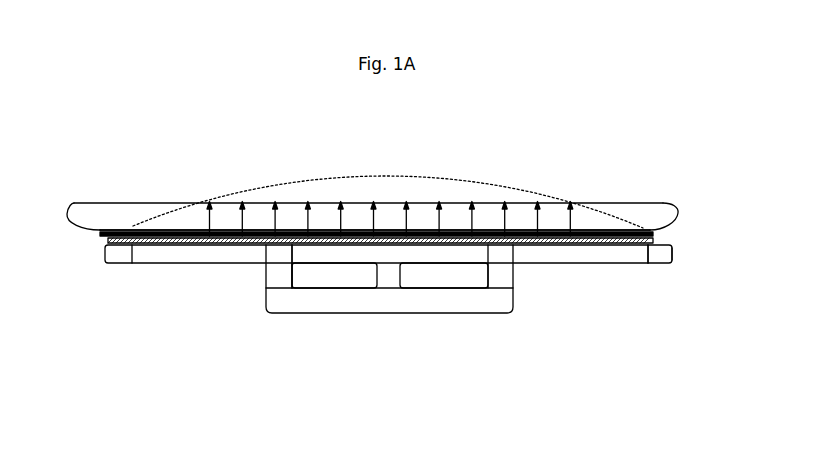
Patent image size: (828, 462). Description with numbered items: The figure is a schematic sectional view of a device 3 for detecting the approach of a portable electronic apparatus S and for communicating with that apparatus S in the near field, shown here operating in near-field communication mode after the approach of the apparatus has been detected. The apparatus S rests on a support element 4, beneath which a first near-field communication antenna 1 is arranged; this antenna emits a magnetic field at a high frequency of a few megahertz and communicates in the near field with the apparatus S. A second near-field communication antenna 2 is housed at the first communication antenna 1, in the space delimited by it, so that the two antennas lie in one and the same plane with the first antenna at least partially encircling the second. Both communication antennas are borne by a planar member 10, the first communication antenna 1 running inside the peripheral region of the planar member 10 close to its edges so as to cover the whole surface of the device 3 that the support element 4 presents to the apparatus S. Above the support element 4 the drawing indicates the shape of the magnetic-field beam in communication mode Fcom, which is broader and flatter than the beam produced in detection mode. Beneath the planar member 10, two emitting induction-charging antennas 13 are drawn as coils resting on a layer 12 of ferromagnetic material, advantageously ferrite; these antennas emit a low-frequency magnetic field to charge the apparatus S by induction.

The portable electronic apparatus S is at (93, 210).
The first near-field communication antenna 1 is at (663, 253).
The second near-field communication antenna 2 is at (286, 250).
The device 3 is at (145, 229).
The support element 4 is at (193, 230).
The planar member 10 is at (557, 253).
The layer made of ferromagnetic material 12 is at (308, 302).
The emitting induction-charging antenna 13 is at (442, 275).
The magnetic-field beam in communication mode Fcom is at (390, 176).